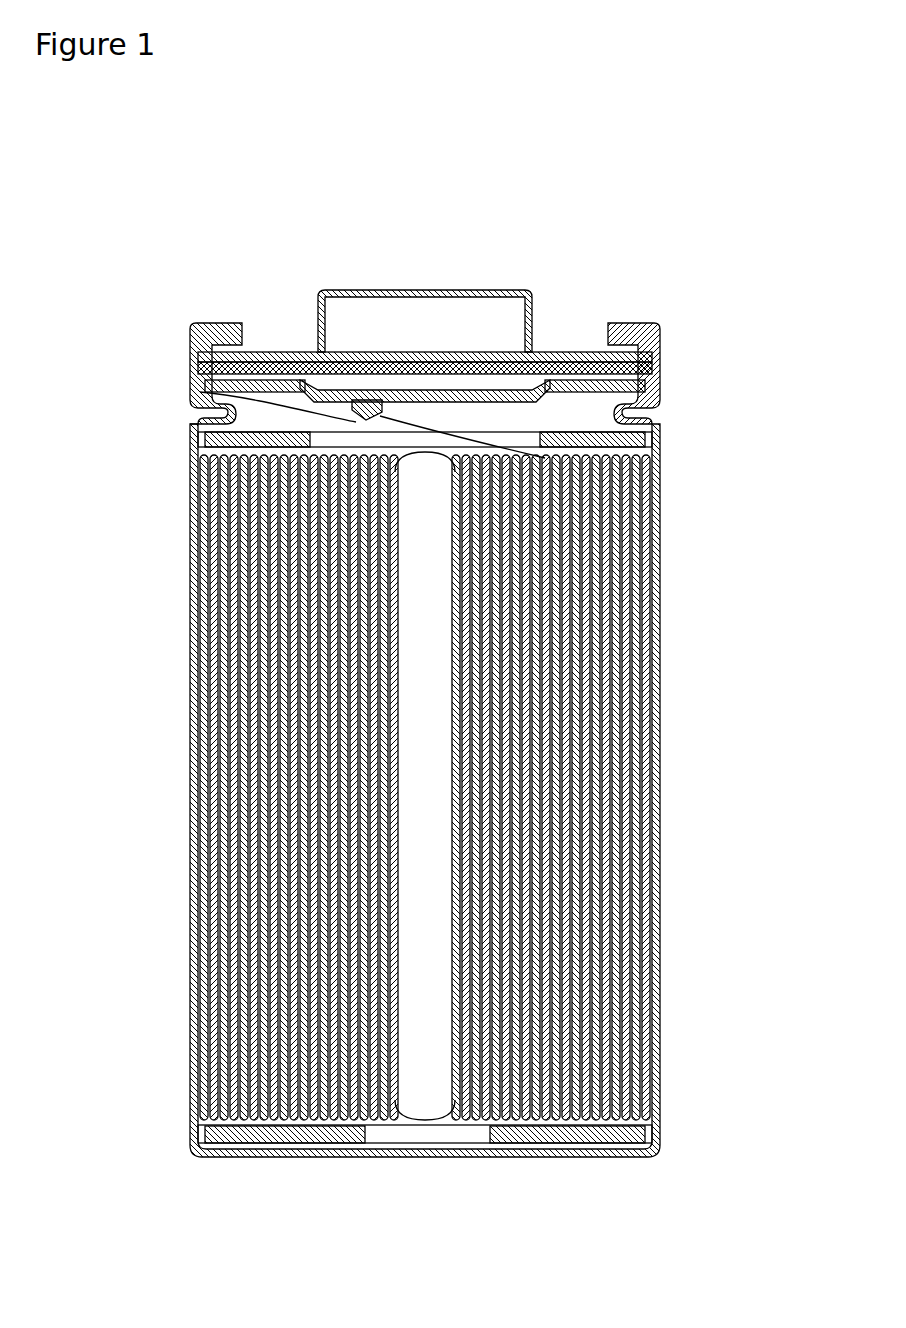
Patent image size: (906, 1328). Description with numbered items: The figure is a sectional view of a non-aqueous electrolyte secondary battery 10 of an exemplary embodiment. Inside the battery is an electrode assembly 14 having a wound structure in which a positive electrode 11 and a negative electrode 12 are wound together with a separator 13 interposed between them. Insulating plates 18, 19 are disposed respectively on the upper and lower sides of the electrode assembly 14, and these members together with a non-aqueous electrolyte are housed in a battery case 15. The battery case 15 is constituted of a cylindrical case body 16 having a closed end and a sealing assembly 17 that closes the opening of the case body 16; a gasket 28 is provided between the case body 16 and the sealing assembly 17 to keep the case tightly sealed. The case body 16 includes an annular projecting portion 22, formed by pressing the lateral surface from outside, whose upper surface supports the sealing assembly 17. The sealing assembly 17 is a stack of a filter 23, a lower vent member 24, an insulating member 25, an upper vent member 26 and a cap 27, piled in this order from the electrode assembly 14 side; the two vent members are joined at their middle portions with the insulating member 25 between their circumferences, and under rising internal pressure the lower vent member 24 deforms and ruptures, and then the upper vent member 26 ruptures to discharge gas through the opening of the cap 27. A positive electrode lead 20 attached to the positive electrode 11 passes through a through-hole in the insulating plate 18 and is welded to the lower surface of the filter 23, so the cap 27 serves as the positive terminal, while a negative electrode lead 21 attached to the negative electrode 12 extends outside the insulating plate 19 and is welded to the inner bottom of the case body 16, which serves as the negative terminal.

The non-aqueous electrolyte secondary battery 10 is at (681, 170).
The positive electrode 11 is at (660, 846).
The negative electrode 12 is at (660, 876).
The separator 13 is at (745, 838).
The electrode assembly 14 is at (493, 786).
The battery case 15 is at (425, 308).
The case body 16 is at (622, 323).
The sealing assembly 17 is at (560, 352).
The insulating plate 18 is at (660, 440).
The insulating plate 19 is at (660, 1140).
The positive electrode lead 20 is at (195, 393).
The negative electrode lead 21 is at (205, 1134).
The projecting portion 22 is at (195, 412).
The filter 23 is at (397, 386).
The lower vent member 24 is at (290, 372).
The insulating member 25 is at (270, 352).
The upper vent member 26 is at (300, 382).
The cap 27 is at (425, 279).
The gasket 28 is at (660, 345).